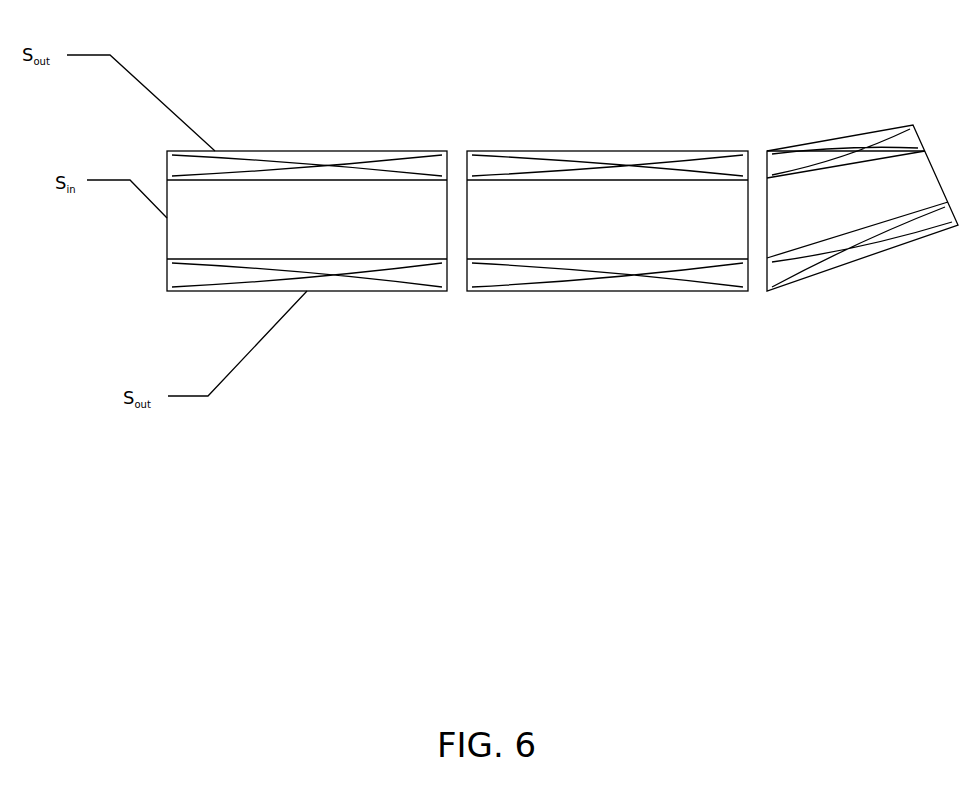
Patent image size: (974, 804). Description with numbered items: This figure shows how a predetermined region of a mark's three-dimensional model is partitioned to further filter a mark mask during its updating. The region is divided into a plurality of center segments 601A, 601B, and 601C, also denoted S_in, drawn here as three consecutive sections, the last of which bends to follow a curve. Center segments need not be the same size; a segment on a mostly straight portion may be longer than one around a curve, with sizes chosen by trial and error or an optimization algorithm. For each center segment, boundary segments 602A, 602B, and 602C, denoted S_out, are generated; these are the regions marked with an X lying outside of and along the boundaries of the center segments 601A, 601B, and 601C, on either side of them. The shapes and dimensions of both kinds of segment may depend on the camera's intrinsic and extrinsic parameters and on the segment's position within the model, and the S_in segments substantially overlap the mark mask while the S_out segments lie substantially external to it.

The center segment 601A is at (318, 197).
The boundary segment 602A is at (405, 155).
The center segment 601B is at (648, 208).
The boundary segment 602B is at (696, 162).
The center segment 601C is at (862, 189).
The boundary segment 602C is at (890, 143).